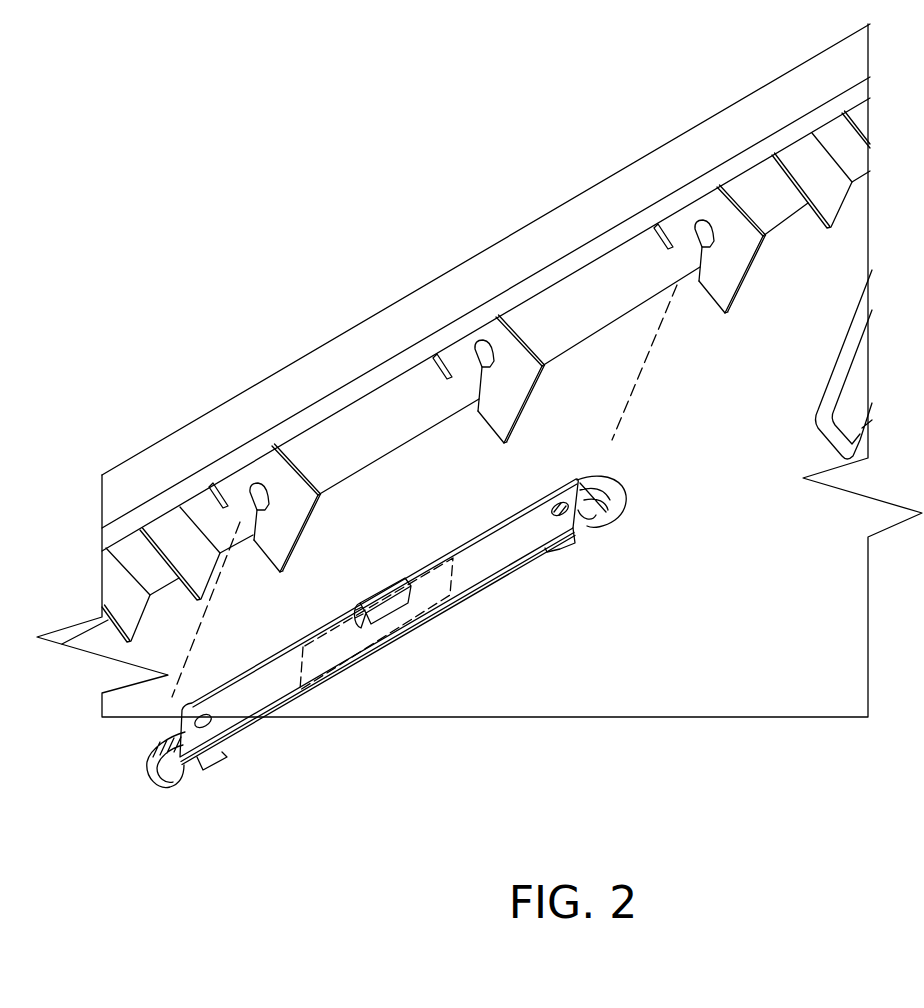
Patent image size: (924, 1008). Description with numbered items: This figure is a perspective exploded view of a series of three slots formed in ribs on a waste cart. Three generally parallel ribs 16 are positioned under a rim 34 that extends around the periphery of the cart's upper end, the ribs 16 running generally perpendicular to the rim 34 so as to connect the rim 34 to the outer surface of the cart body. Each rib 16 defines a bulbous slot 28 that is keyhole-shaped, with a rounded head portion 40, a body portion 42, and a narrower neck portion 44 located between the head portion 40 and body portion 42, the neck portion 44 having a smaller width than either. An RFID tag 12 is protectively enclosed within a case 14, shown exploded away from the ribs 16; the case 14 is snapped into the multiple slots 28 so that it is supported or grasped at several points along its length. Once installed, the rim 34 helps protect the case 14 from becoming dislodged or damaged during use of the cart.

The RFID tag 12 is at (460, 607).
The case 14 is at (530, 567).
The rib 16 is at (218, 507).
The bulbous slot 28 is at (264, 483).
The rim 34 is at (813, 107).
The head portion 40 is at (268, 496).
The body portion 42 is at (285, 559).
The neck portion 44 is at (247, 528).